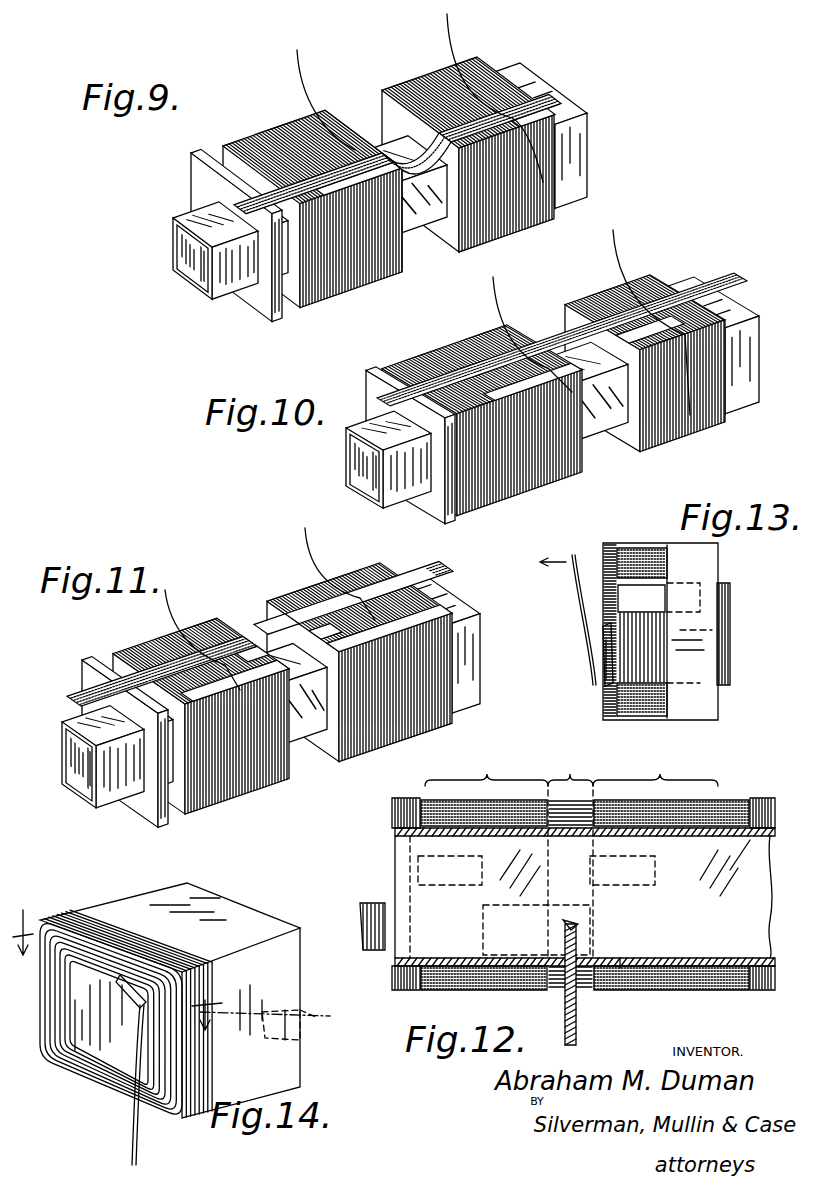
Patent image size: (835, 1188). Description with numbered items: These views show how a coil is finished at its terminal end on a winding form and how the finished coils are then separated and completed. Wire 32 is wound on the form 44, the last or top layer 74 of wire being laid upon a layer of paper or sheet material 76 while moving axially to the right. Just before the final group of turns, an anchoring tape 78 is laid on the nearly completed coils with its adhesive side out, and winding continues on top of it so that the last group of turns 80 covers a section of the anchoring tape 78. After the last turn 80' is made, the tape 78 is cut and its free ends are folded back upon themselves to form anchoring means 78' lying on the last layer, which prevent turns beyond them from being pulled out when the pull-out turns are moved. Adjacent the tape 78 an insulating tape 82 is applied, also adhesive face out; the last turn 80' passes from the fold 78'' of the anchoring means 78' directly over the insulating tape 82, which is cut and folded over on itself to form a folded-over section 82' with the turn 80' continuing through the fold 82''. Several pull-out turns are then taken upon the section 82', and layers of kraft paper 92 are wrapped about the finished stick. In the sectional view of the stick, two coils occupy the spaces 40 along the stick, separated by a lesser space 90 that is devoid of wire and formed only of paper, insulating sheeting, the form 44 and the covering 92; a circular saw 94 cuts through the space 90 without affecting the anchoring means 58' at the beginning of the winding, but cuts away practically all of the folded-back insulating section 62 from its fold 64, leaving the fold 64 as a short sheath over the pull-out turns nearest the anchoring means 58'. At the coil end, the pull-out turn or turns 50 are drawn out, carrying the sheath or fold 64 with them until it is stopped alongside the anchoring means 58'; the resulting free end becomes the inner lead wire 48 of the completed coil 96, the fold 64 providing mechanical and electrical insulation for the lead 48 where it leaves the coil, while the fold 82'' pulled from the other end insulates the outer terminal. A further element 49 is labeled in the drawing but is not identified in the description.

In FIG. 9, the wire 32 is at (300, 68).
In FIG. 10, the wire 32 is at (610, 264).
In FIG. 11, the wire 32 is at (310, 534).
In FIG. 9, the form 44 is at (190, 291).
In FIG. 9, the last layer of wire 74 is at (237, 151).
In FIG. 9, the layer of paper or sheet material 76 is at (430, 252).
In FIG. 10, the layer of paper or sheet material 76 is at (604, 461).
In FIG. 11, the layer of paper or sheet material 76 is at (307, 744).
In FIG. 9, the anchoring tape 78 is at (231, 251).
In FIG. 10, the anchoring tape 78 is at (372, 446).
In FIG. 9, the anchoring means 78' is at (532, 182).
In FIG. 10, the anchoring means 78' is at (554, 426).
In FIG. 11, the anchoring means 78' is at (316, 716).
In FIG. 11, the fold of the anchoring means 78'' is at (350, 628).
In FIG. 9, the last group of turns 80 is at (312, 202).
In FIG. 9, the last turn 80' is at (489, 183).
In FIG. 10, the last turn 80' is at (674, 399).
In FIG. 11, the last turn 80' is at (379, 699).
In FIG. 10, the insulating tape 82 is at (586, 318).
In FIG. 11, the insulating tape 82 is at (161, 670).
In FIG. 11, the folded-over section of insulating tape 82' is at (348, 585).
In FIG. 11, the fold of insulating tape 82'' is at (297, 577).
In FIG. 14, the fold of insulating tape 82'' is at (332, 1036).
In FIG. 12, the coil spaces 40 is at (585, 867).
In FIG. 12, the space between coils 90 is at (570, 866).
In FIG. 13, the kraft paper 92 is at (643, 534).
In FIG. 12, the kraft paper 92 is at (430, 993).
In FIG. 14, the kraft paper 92 is at (245, 906).
In FIG. 12, the insulating folded-back section 62 is at (372, 903).
In FIG. 13, the fold or sheath 64 is at (606, 673).
In FIG. 12, the fold or sheath 64 is at (617, 990).
In FIG. 14, the fold or sheath 64 is at (143, 1008).
In FIG. 12, the circular saw 94 is at (578, 1036).
In FIG. 13, the anchoring means 58' is at (603, 598).
In FIG. 12, the anchoring means 58' is at (549, 897).
In FIG. 13, the lead wire 48 is at (580, 553).
In FIG. 14, the lead wire 48 is at (131, 1147).
In FIG. 13, the pull-out turns 50 is at (597, 648).
In FIG. 14, the coil 96 is at (118, 897).
In FIG. 14, the lead 49 is at (115, 1054).